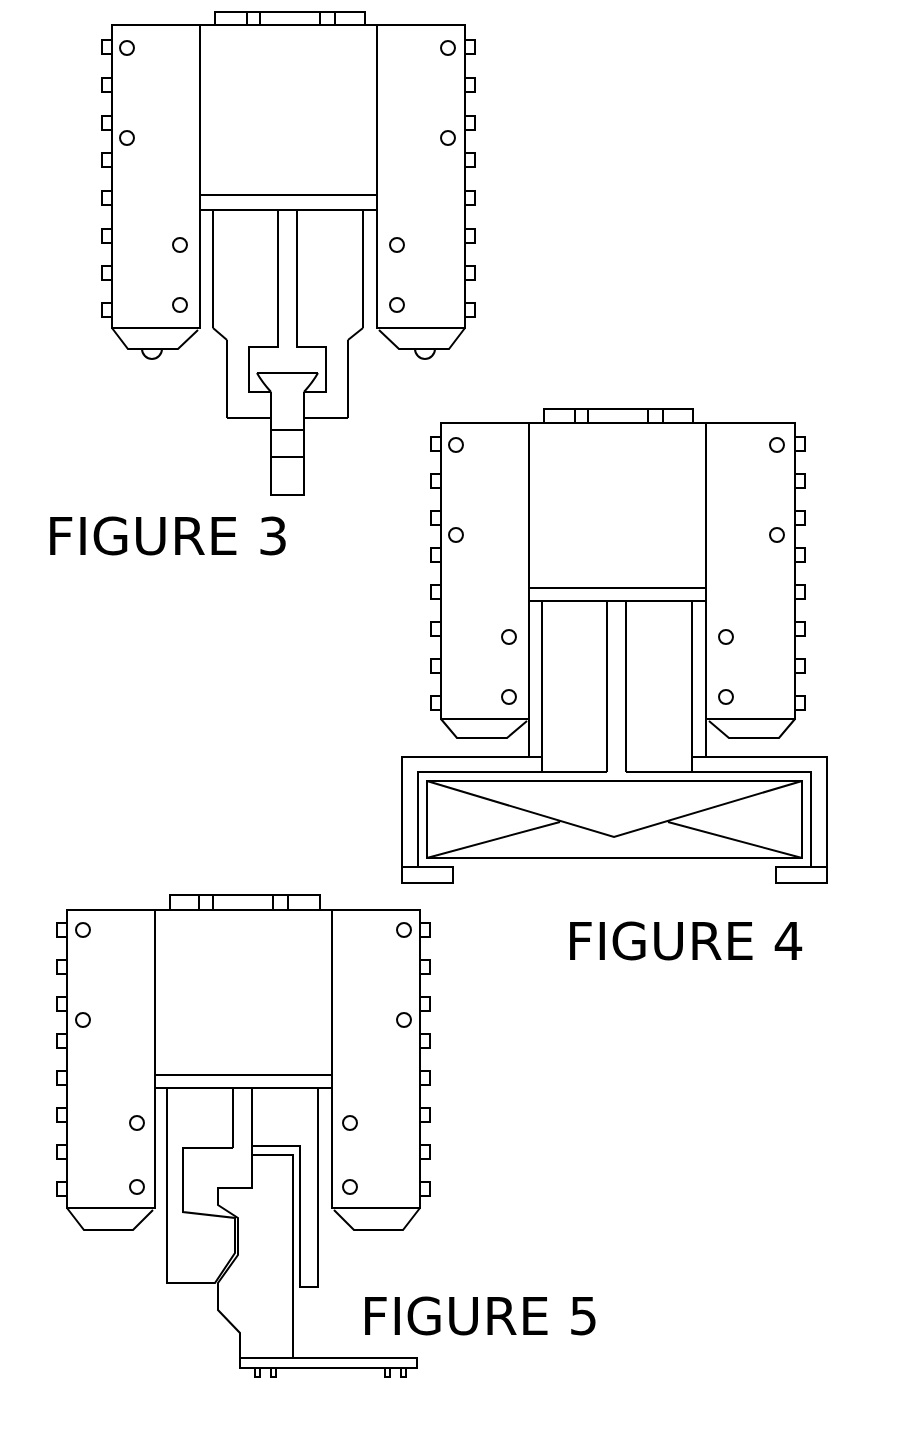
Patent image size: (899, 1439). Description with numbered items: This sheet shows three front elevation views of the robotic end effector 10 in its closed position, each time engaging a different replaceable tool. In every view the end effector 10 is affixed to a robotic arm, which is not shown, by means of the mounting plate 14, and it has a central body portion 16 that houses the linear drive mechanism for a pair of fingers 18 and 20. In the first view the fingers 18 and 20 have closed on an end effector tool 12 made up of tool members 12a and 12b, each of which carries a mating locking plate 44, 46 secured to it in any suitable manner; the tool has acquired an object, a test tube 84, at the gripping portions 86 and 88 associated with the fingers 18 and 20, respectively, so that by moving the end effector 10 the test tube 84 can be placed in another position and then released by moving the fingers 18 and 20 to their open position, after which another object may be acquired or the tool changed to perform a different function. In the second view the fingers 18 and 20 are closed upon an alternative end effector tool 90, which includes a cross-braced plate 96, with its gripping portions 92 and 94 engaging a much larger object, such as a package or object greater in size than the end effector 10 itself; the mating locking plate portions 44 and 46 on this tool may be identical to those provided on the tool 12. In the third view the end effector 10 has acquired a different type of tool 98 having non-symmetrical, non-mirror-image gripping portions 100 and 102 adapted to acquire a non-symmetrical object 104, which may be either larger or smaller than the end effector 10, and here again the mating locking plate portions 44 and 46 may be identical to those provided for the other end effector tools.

In FIG. 3, the end effector 10 is at (472, 32).
In FIG. 4, the end effector 10 is at (800, 423).
In FIG. 5, the end effector 10 is at (438, 942).
In FIG. 3, the end effector tool 12 is at (319, 404).
In FIG. 3, the tool member 12a is at (226, 338).
In FIG. 3, the tool member 12b is at (350, 337).
In FIG. 3, the mounting plate 14 is at (343, 17).
In FIG. 4, the mounting plate 14 is at (676, 409).
In FIG. 5, the mounting plate 14 is at (298, 893).
In FIG. 3, the central body portion 16 is at (305, 116).
In FIG. 4, the central body portion 16 is at (638, 521).
In FIG. 5, the central body portion 16 is at (261, 986).
In FIG. 3, the finger 18 is at (128, 213).
In FIG. 4, the finger 18 is at (456, 652).
In FIG. 5, the finger 18 is at (82, 1192).
In FIG. 3, the finger 20 is at (440, 216).
In FIG. 4, the finger 20 is at (780, 648).
In FIG. 5, the finger 20 is at (400, 1136).
In FIG. 3, the mating locking plate 44 is at (205, 287).
In FIG. 4, the mating locking plate 44 is at (535, 612).
In FIG. 5, the mating locking plate 44 is at (160, 1140).
In FIG. 3, the mating locking plate 46 is at (372, 289).
In FIG. 4, the mating locking plate 46 is at (696, 622).
In FIG. 5, the mating locking plate 46 is at (327, 1157).
In FIG. 3, the test tube 84 is at (293, 446).
In FIG. 3, the gripping portion 86 is at (243, 414).
In FIG. 3, the gripping portion 88 is at (325, 414).
In FIG. 4, the alternative end effector tool 90 is at (780, 752).
In FIG. 4, the gripping portion 92 is at (410, 836).
In FIG. 4, the gripping portion 94 is at (822, 860).
In FIG. 4, the cross-braced plate 96 is at (699, 856).
In FIG. 5, the tool 98 is at (180, 1296).
In FIG. 5, the gripping portion 100 is at (180, 1245).
In FIG. 5, the gripping portion 102 is at (310, 1262).
In FIG. 5, the non-symmetrical object 104 is at (257, 1325).